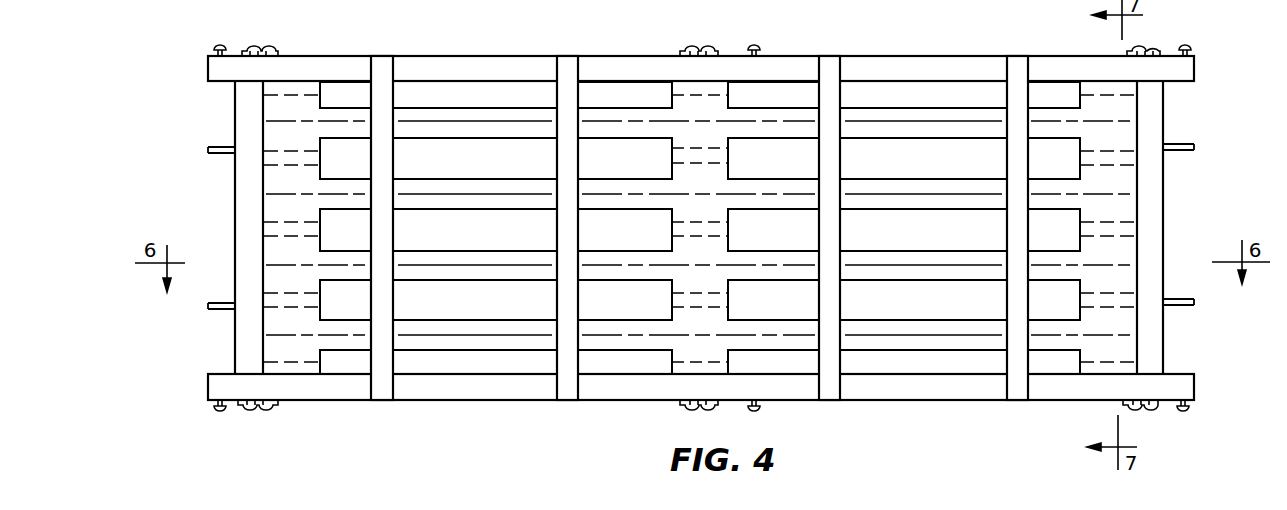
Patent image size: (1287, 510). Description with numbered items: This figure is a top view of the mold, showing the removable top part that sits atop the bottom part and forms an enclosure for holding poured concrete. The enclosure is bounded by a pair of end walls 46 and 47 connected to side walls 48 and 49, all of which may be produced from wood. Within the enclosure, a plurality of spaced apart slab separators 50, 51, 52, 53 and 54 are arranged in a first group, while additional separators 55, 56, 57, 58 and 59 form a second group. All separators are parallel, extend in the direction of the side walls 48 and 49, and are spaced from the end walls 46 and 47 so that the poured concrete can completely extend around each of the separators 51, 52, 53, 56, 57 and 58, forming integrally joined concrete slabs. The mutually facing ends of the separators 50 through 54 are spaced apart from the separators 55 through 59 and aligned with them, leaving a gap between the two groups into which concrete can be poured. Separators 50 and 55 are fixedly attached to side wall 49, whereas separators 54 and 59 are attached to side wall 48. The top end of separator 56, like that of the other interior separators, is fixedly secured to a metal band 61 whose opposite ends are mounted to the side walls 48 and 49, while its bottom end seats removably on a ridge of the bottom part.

The end wall 46 is at (247, 188).
The end wall 47 is at (1153, 210).
The side wall 48 is at (890, 72).
The side wall 49 is at (923, 390).
The slab separator 50 is at (625, 362).
The slab separator 51 is at (625, 300).
The slab separator 52 is at (625, 230).
The slab separator 53 is at (625, 158).
The slab separator 54 is at (625, 95).
The slab separator 55 is at (773, 362).
The slab separator 56 is at (773, 300).
The slab separator 57 is at (773, 230).
The slab separator 58 is at (773, 158).
The slab separator 59 is at (773, 95).
The metal band 61 is at (1016, 62).